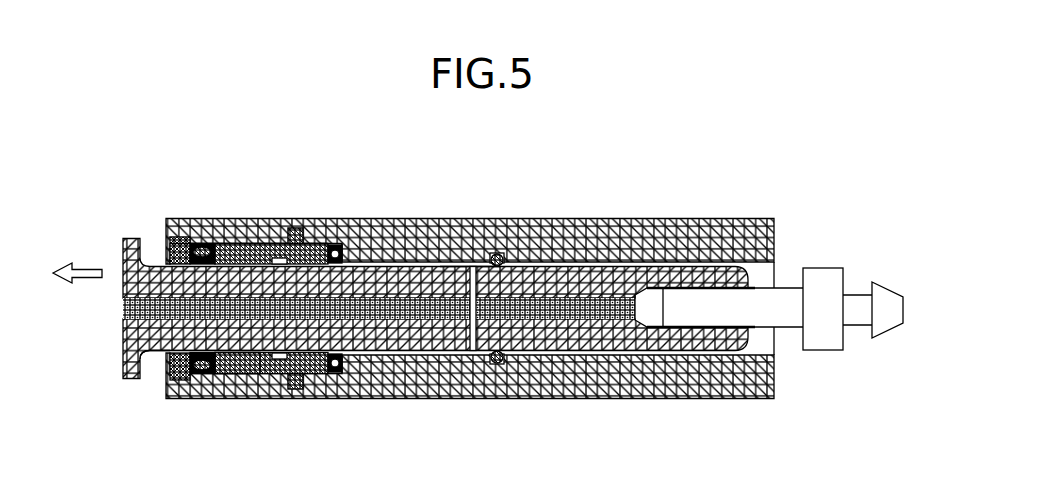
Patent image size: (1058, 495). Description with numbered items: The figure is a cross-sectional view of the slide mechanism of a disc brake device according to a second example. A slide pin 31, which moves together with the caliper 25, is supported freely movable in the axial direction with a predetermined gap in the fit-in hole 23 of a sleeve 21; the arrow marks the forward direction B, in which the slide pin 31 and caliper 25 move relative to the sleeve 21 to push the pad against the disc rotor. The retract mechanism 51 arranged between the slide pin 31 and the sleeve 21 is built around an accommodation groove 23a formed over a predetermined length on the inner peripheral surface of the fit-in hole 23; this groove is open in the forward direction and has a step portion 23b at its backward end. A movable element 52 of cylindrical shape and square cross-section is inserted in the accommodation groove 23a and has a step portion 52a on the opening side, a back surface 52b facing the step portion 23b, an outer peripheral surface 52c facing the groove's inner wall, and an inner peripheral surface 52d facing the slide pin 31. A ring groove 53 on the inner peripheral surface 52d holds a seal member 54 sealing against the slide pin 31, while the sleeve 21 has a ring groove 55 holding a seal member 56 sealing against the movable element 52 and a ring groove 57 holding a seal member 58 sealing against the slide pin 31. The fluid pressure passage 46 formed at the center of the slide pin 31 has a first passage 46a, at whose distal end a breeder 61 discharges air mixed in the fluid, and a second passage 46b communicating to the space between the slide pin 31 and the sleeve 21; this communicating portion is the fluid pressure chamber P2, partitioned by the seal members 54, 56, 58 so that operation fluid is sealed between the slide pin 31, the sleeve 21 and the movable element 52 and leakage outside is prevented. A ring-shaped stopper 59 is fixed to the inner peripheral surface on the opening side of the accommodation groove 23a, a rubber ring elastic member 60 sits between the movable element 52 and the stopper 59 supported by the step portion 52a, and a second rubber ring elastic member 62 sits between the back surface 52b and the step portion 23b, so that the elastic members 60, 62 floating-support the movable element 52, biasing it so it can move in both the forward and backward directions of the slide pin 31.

The sleeve 21 is at (752, 236).
The fit-in hole 23 is at (758, 362).
The accommodation groove 23a is at (232, 243).
The step portion 23b is at (333, 245).
The caliper 25 is at (744, 251).
The slide pin 31 is at (666, 290).
The fluid pressure passage 46 is at (395, 310).
The first passage 46a is at (605, 312).
The second passage 46b is at (470, 258).
The retract mechanism 51 is at (262, 384).
The movable element 52 is at (251, 248).
The step portion 52a is at (203, 238).
The back surface 52b is at (350, 375).
The outer peripheral surface 52c is at (253, 378).
The inner peripheral surface 52d is at (222, 354).
The ring groove 53 is at (280, 360).
The seal member 54 is at (283, 244).
The ring groove 55 is at (297, 232).
The seal member 56 is at (296, 388).
The ring groove 57 is at (508, 267).
The seal member 58 is at (497, 362).
The stopper 59 is at (165, 364).
The elastic member 60 is at (195, 365).
The breeder 61 is at (823, 287).
The elastic member 62 is at (345, 372).
The fluid pressure chamber P2 is at (440, 356).
The forward direction B is at (83, 283).